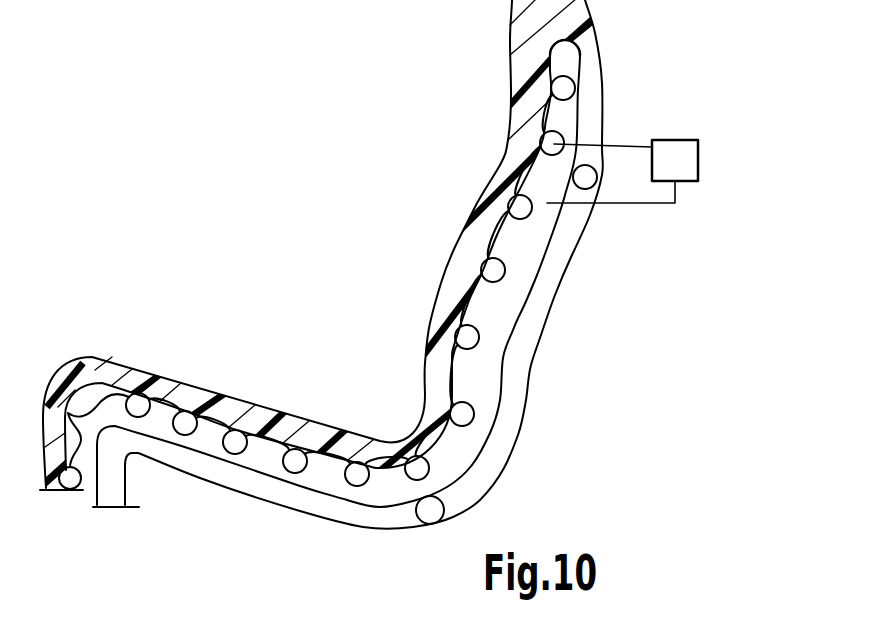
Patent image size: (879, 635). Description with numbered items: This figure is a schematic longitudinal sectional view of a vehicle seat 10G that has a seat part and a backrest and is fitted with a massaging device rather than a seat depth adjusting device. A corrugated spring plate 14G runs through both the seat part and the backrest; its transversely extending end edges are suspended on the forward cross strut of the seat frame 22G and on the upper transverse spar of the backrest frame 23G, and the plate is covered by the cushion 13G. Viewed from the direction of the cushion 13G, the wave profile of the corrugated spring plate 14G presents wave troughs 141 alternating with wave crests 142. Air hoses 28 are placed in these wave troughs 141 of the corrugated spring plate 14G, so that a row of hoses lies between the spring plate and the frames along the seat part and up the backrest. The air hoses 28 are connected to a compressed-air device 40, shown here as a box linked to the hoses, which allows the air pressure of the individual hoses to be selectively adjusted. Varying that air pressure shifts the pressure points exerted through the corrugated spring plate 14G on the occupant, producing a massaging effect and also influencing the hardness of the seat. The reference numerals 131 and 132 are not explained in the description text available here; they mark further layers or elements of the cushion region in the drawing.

The vehicle seat 10G is at (403, 308).
The cushion 13G is at (246, 349).
The corrugated spring plate 14G is at (466, 197).
The seat frame 22G is at (268, 495).
The backrest frame 23G is at (520, 330).
The air hoses 28 is at (406, 276).
The compressed-air device 40 is at (699, 153).
The seat cushion pad layer 131 is at (259, 412).
The back pad heating element 132 is at (495, 215).
The wave troughs 141 is at (506, 256).
The wave crests 142 is at (475, 298).